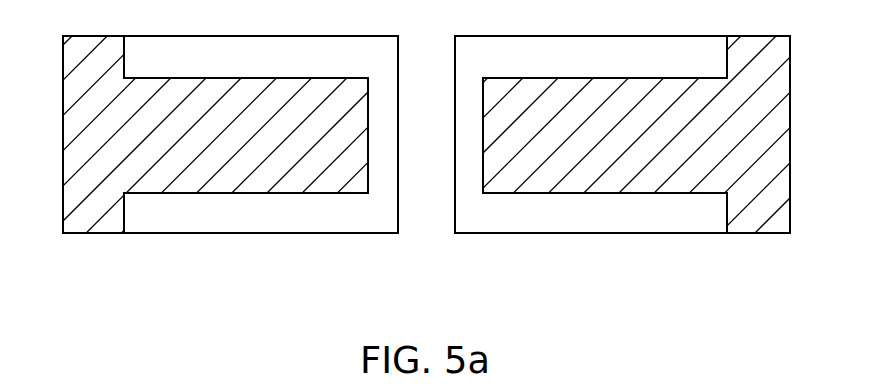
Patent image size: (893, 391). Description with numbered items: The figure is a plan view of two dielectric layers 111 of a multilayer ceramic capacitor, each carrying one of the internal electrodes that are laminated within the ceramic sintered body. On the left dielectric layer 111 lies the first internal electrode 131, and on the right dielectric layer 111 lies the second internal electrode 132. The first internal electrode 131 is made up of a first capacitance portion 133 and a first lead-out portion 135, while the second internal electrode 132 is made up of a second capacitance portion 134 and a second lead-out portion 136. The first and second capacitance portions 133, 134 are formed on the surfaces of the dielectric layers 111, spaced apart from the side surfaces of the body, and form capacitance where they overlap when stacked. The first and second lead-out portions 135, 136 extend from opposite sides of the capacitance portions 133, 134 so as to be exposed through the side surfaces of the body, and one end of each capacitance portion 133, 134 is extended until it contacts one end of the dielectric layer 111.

The dielectric layer 111 is at (320, 218).
The first internal electrode 131 is at (164, 272).
The second internal electrode 132 is at (704, 272).
The first capacitance portion 133 is at (223, 150).
The second capacitance portion 134 is at (622, 150).
The first lead-out portion 135 is at (95, 217).
The second lead-out portion 136 is at (755, 217).